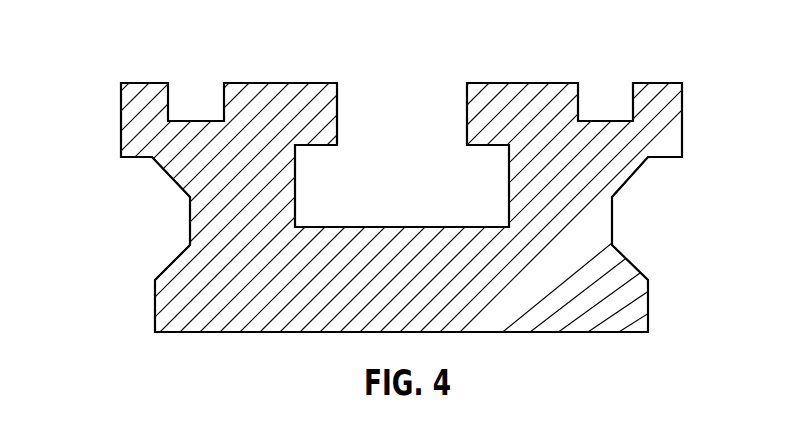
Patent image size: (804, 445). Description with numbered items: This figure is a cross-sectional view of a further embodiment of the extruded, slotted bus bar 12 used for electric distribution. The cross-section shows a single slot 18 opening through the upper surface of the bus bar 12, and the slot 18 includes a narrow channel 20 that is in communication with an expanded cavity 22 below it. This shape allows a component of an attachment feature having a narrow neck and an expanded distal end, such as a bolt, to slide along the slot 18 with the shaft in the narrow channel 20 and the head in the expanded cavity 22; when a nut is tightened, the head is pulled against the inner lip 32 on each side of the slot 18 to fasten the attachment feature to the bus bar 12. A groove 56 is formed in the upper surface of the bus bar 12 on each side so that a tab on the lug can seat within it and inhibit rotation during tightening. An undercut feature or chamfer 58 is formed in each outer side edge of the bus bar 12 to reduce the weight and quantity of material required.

The bus bar 12 is at (96, 46).
The slot 18 is at (403, 90).
The narrow channel 20 is at (402, 121).
The expanded cavity 22 is at (402, 188).
The inner lip 32 is at (317, 145).
The groove 56 is at (196, 86).
The chamfer 58 is at (155, 205).